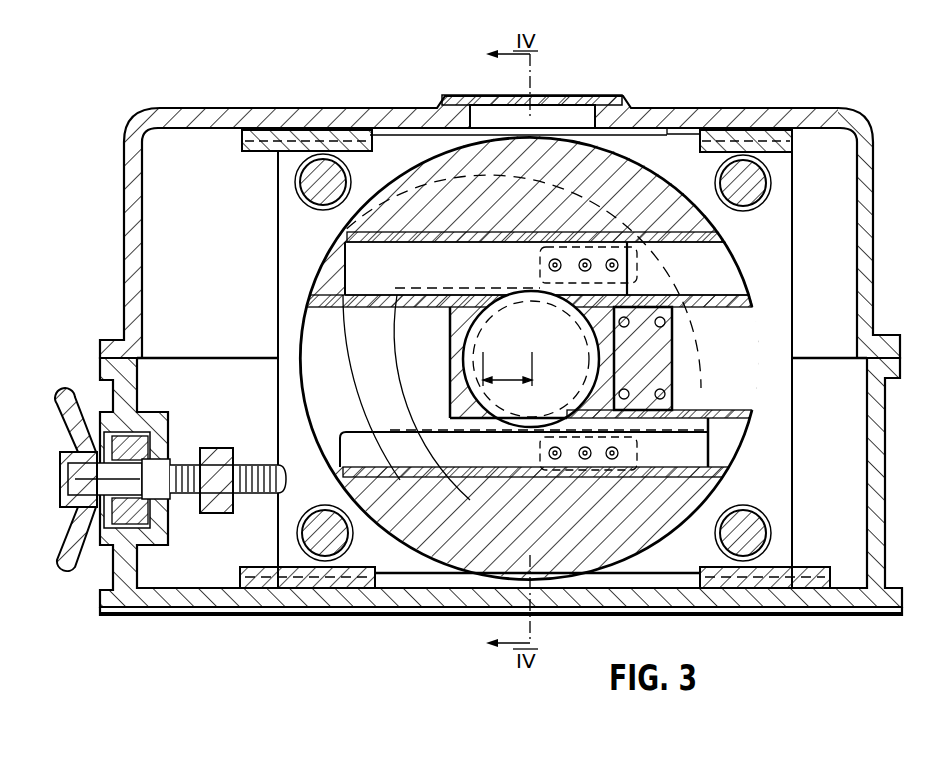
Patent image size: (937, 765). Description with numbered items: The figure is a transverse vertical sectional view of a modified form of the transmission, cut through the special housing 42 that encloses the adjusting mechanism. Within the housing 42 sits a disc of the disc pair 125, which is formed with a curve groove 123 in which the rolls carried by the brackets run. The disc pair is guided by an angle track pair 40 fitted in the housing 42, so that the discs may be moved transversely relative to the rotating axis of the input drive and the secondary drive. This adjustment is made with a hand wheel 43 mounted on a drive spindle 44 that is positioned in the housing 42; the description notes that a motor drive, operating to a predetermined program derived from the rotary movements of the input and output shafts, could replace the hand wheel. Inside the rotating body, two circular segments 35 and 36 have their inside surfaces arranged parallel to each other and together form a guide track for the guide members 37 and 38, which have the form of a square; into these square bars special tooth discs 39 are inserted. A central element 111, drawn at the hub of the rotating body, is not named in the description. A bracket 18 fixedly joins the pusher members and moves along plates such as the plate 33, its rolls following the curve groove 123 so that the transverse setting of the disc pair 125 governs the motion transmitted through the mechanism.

The housing 42 is at (866, 182).
The disc 125 is at (775, 258).
The curve groove 123 is at (313, 350).
The circular segment 35 is at (633, 186).
The guide member 37 is at (454, 258).
The plate 33 is at (712, 263).
The bearing 111 is at (515, 316).
The tooth disc 39 is at (407, 346).
The bracket 18 is at (660, 378).
The guide member 38 is at (340, 450).
The circular segment 36 is at (640, 540).
The angle track 40 is at (255, 572).
The drive spindle 44 is at (185, 468).
The hand wheel 43 is at (62, 567).